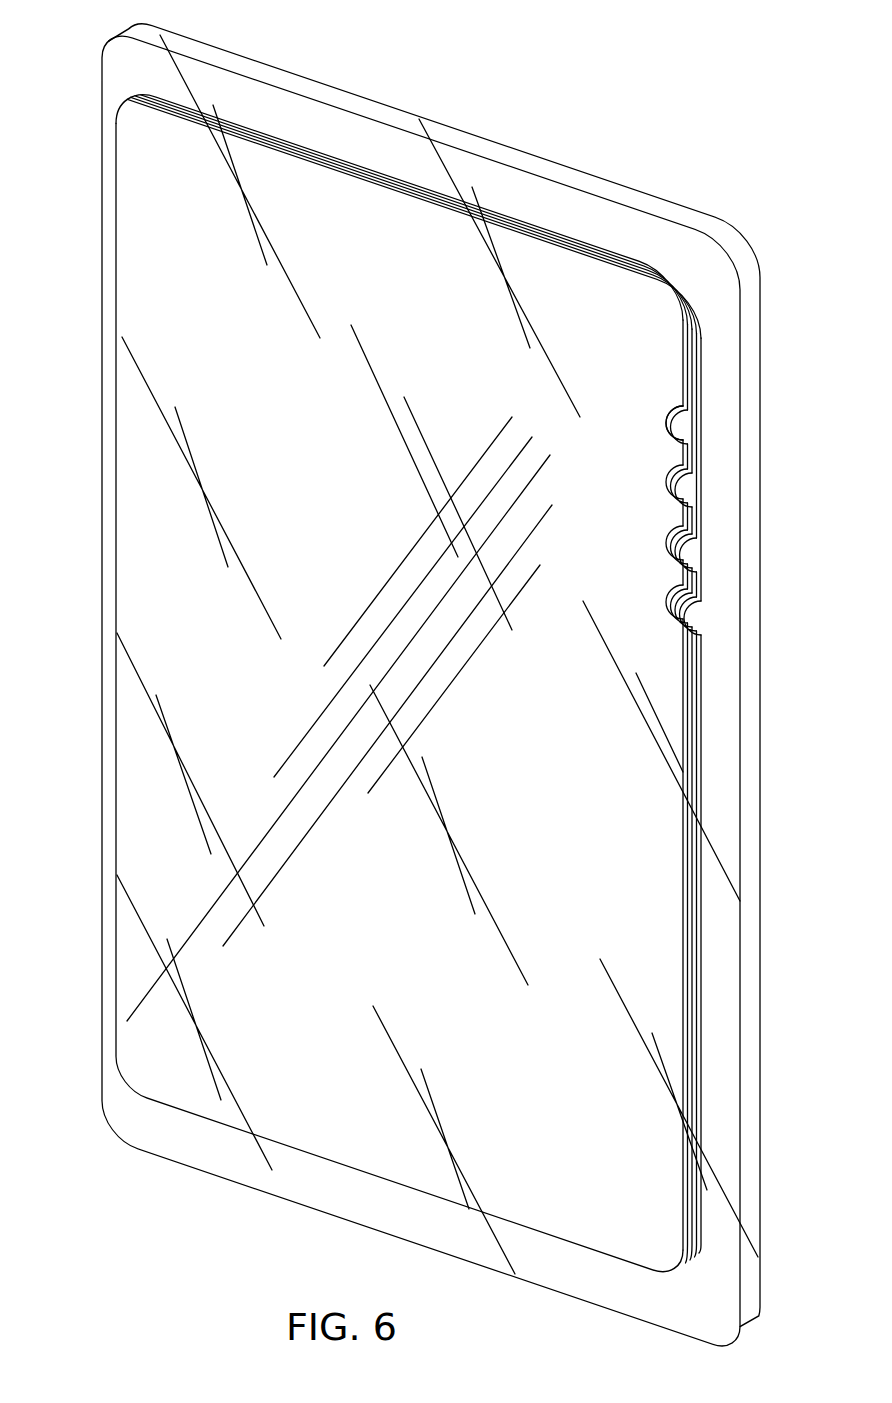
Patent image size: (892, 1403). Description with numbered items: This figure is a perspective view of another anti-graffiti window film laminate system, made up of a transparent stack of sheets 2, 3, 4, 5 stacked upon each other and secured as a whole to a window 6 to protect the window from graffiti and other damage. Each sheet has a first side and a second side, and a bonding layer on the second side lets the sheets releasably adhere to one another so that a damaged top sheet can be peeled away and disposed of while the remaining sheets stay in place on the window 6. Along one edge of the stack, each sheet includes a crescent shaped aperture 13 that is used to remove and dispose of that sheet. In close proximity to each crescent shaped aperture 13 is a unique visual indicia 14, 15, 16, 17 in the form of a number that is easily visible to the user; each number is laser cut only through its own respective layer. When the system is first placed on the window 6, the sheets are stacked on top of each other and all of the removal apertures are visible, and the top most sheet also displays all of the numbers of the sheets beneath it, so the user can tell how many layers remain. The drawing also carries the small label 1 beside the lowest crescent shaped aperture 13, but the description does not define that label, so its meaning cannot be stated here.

The first layer 1 is at (665, 604).
The second layer (cover glass) 2 is at (137, 289).
The third layer 3 is at (527, 227).
The fourth layer 4 is at (638, 268).
The fifth layer 5 is at (687, 277).
The housing 6 is at (742, 268).
The first step portion 13 is at (688, 416).
The fourth notch 14 is at (693, 610).
The third notch 15 is at (690, 548).
The second notch 16 is at (688, 490).
The first notch 17 is at (686, 441).